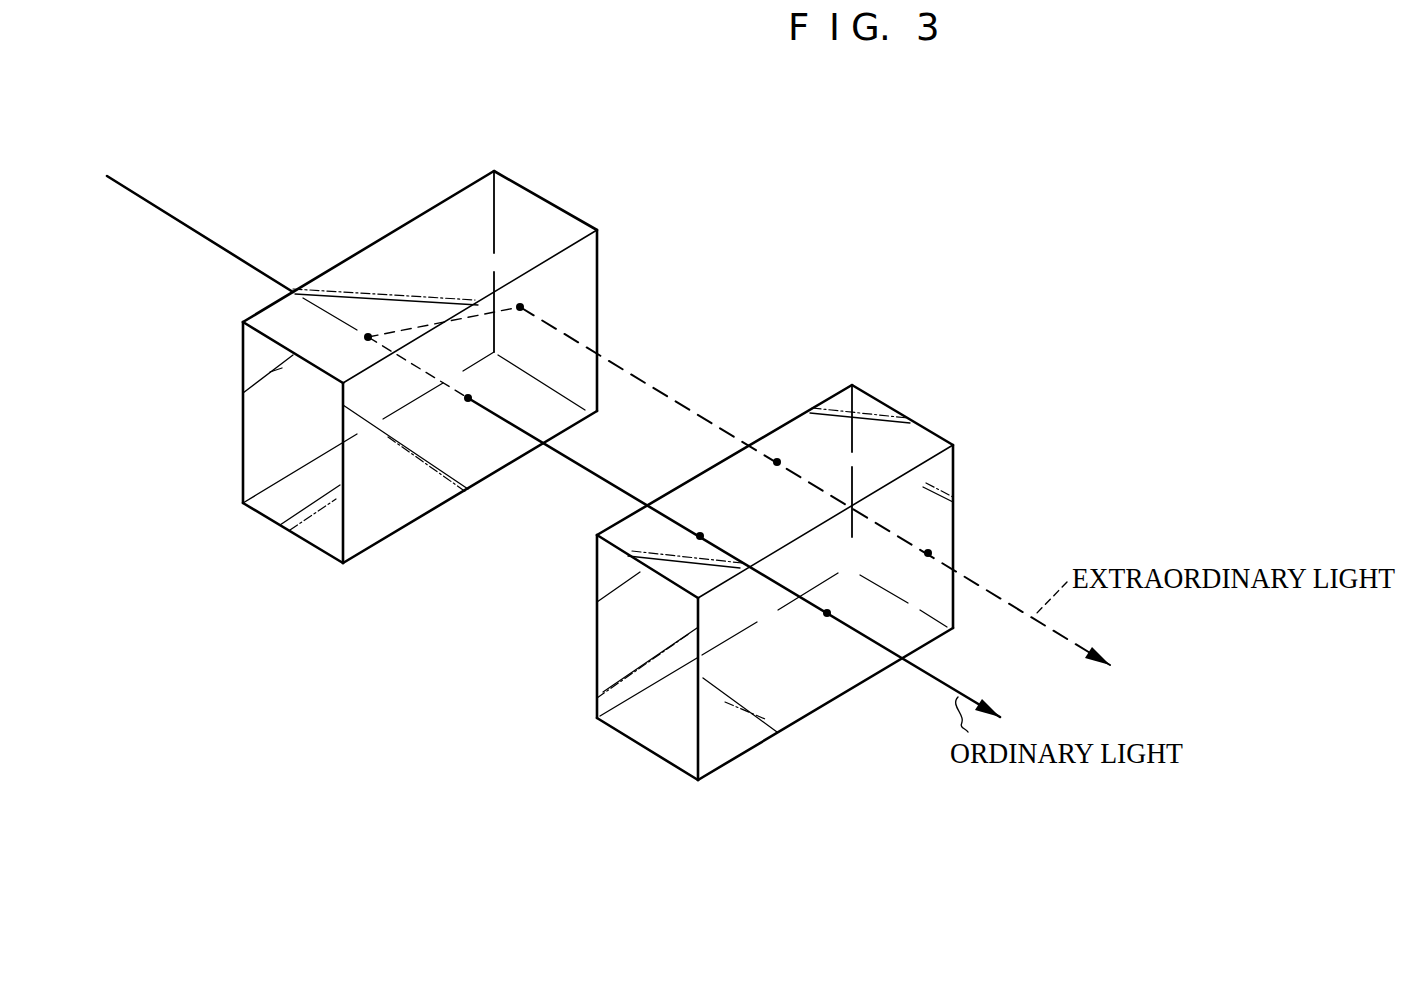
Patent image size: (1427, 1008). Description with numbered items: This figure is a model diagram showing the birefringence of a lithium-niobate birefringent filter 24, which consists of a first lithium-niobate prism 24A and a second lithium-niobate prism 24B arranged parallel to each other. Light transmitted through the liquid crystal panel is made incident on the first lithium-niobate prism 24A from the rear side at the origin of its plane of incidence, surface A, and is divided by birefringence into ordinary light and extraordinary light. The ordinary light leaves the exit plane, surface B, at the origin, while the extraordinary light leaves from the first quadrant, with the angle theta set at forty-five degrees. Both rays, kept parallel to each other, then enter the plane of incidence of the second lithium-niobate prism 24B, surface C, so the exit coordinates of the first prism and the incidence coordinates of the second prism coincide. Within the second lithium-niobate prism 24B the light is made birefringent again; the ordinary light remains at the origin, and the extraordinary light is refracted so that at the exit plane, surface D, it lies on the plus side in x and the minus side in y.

The birefringent filter 24 is at (560, 86).
The first lithium-niobate prism 24A is at (468, 190).
The second lithium-niobate prism 24B is at (807, 410).
The surface A is at (488, 205).
The surface B is at (590, 257).
The surface C is at (843, 405).
The surface D is at (947, 466).